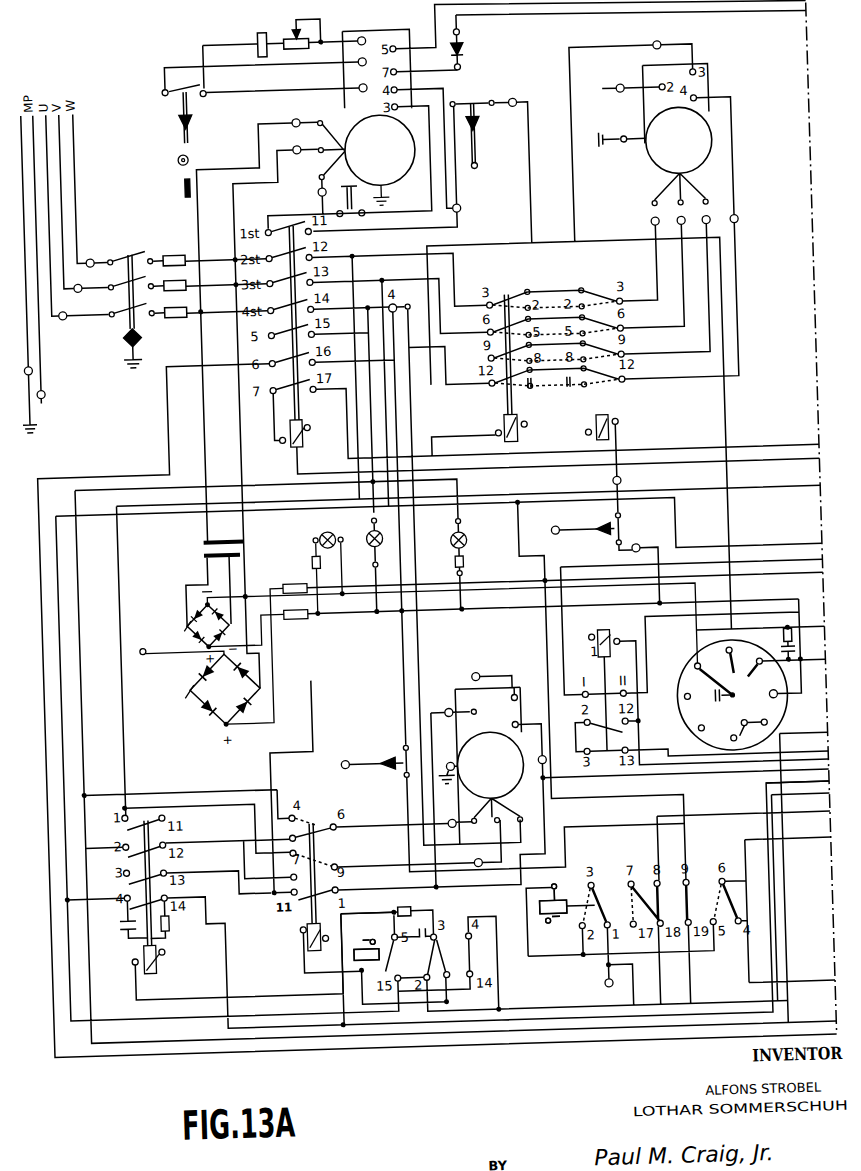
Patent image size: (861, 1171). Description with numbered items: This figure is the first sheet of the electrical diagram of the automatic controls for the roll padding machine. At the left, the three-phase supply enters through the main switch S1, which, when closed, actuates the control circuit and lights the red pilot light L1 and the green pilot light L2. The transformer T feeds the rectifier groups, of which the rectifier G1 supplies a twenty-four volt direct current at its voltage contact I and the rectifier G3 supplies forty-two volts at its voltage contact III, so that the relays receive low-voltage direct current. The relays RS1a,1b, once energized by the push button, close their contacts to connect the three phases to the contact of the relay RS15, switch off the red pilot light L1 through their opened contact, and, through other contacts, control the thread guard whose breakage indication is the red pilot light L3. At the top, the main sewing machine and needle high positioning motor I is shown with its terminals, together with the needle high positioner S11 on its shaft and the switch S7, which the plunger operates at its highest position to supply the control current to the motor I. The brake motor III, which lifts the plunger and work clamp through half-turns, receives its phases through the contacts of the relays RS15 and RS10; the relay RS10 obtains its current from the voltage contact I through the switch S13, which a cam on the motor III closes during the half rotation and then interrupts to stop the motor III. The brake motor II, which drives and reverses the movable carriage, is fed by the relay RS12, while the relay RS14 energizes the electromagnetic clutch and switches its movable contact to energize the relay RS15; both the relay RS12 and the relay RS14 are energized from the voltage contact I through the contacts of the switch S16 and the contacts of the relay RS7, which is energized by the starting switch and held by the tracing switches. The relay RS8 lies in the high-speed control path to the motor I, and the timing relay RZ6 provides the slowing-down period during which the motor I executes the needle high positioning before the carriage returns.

The needle high positioner S11 is at (191, 141).
The switch S7 is at (482, 138).
The main switch S1 is at (124, 312).
The switch S13 is at (595, 515).
The switch S16 is at (374, 762).
The main sewing machine motor I is at (380, 160).
The brake motor II is at (490, 765).
The brake motor III is at (677, 131).
The relays RS1a,1b is at (303, 444).
The relay RS15 is at (489, 428).
The relay RS10 is at (620, 420).
The relay RS8 is at (601, 632).
The relay RS7 is at (552, 914).
The relay RS12 is at (295, 937).
The relay RS14 is at (368, 953).
The timing relay RZ6 is at (732, 691).
The red pilot light L1 is at (383, 541).
The green pilot light L2 is at (328, 566).
The red pilot light L3 is at (467, 547).
The transformer T is at (216, 583).
The rectifier G1 is at (417, 631).
The rectifier G3 is at (210, 657).